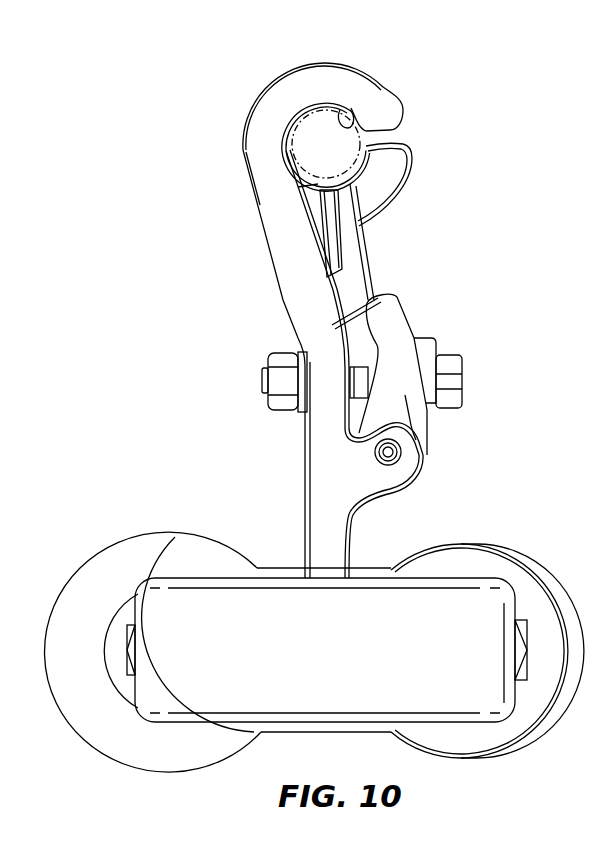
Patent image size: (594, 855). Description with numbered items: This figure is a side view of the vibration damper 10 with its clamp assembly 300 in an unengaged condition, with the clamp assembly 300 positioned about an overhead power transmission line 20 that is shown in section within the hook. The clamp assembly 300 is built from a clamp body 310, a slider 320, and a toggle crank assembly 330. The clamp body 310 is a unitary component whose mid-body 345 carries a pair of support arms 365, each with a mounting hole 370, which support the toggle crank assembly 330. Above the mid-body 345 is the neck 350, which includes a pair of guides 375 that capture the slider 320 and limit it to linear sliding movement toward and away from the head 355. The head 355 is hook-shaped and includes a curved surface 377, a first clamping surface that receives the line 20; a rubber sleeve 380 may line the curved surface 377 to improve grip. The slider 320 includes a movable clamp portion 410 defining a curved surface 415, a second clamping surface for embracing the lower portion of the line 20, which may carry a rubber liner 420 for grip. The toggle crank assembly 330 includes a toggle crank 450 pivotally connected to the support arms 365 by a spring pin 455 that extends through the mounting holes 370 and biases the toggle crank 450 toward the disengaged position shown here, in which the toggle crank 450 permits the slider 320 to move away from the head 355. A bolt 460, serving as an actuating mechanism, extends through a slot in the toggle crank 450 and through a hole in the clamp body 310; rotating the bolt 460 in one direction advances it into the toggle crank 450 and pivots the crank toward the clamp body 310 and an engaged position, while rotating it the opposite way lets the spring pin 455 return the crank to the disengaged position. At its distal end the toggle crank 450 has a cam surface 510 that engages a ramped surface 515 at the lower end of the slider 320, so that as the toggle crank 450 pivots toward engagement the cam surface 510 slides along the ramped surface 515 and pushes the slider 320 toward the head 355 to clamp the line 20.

The vibration damper 10 is at (245, 72).
The overhead power transmission line 20 is at (325, 177).
The clamp assembly 300 is at (428, 205).
The clamp body 310 is at (280, 440).
The slider 320 is at (352, 284).
The toggle crank assembly 330 is at (442, 322).
The mid-body 345 is at (322, 476).
The neck 350 is at (273, 231).
The head 355 is at (267, 118).
The support arms 365 is at (350, 492).
The mounting hole 370 is at (391, 466).
The guides 375 is at (327, 247).
The curved surface 377 is at (402, 125).
The rubber sleeve 380 is at (344, 111).
The movable clamp portion 410 is at (387, 183).
The curved surface 415 is at (397, 147).
The rubber liner 420 is at (345, 186).
The toggle crank 450 is at (392, 377).
The spring pin 455 is at (401, 441).
The bolt 460 is at (455, 389).
The cam surface 510 is at (380, 297).
The ramped surface 515 is at (345, 327).